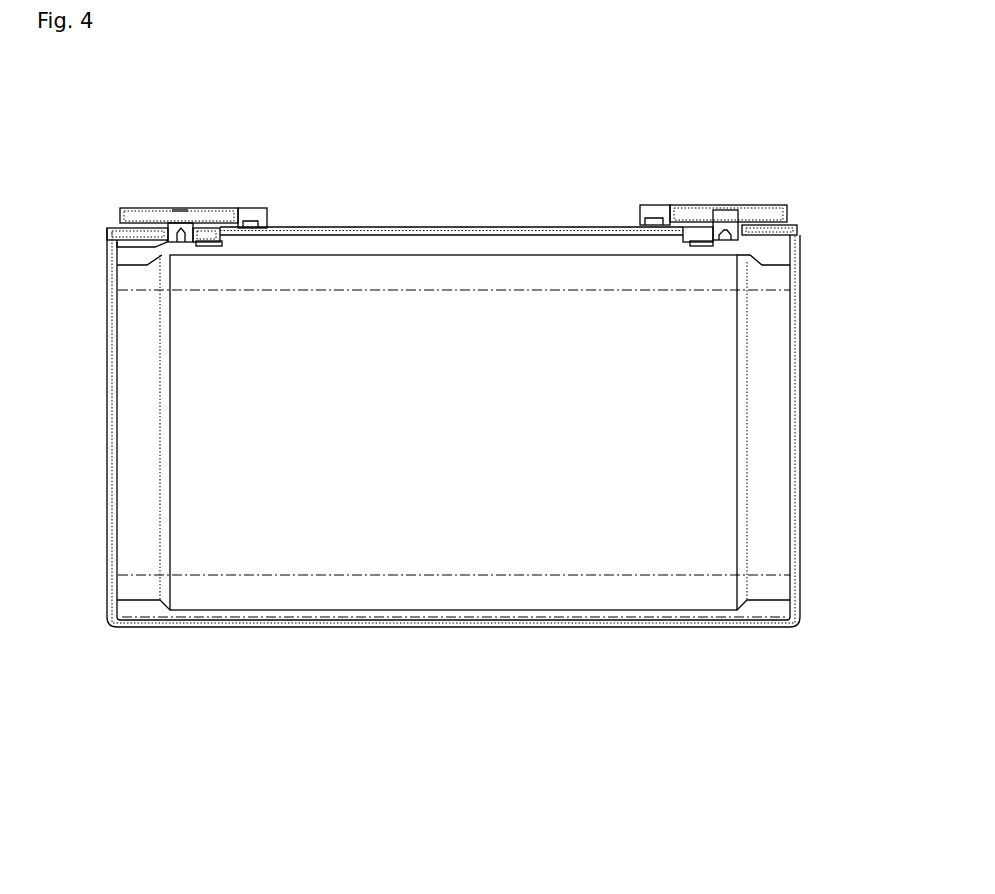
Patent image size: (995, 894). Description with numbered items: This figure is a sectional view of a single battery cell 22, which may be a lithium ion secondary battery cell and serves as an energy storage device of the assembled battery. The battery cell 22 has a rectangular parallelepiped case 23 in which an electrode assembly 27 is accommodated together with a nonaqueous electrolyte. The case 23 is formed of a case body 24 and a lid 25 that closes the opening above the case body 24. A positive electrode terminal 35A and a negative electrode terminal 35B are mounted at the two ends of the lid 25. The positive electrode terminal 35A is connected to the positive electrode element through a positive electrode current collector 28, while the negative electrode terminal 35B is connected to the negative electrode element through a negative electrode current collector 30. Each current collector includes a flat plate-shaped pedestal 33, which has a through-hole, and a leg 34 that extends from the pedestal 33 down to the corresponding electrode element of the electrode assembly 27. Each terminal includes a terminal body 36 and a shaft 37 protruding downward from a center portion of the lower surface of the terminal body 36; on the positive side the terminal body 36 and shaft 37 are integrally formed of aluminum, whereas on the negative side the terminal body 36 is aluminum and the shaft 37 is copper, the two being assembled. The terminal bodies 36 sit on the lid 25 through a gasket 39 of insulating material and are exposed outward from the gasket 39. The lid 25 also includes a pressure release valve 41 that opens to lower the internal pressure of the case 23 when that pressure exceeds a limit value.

The battery cell 22 is at (116, 646).
The case 23 is at (128, 141).
The case body 24 is at (104, 250).
The lid 25 is at (109, 232).
The electrode assembly 27 is at (283, 557).
The positive electrode current collector 28 is at (137, 405).
The negative electrode current collector 30 is at (768, 417).
The pedestal 33 is at (201, 248).
The leg 34 is at (157, 473).
The positive electrode terminal 35A is at (157, 207).
The negative electrode terminal 35B is at (764, 206).
The terminal body 36 is at (213, 215).
The shaft 37 is at (178, 244).
The gasket 39 is at (250, 210).
The pressure release valve 41 is at (454, 227).